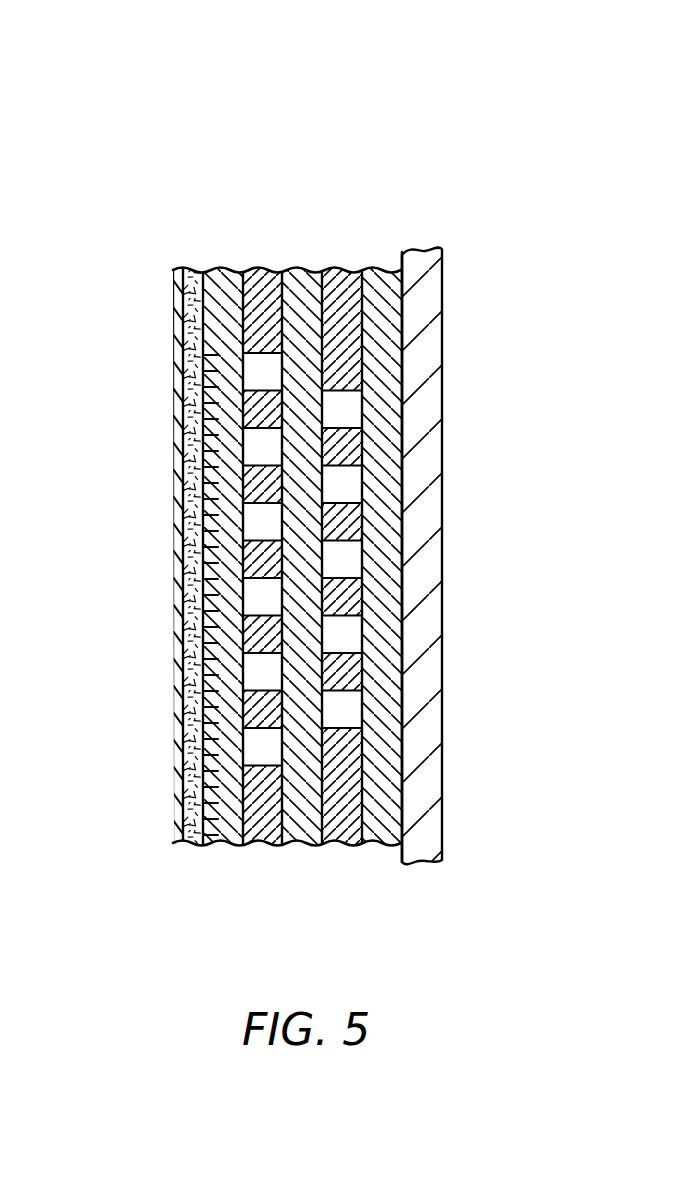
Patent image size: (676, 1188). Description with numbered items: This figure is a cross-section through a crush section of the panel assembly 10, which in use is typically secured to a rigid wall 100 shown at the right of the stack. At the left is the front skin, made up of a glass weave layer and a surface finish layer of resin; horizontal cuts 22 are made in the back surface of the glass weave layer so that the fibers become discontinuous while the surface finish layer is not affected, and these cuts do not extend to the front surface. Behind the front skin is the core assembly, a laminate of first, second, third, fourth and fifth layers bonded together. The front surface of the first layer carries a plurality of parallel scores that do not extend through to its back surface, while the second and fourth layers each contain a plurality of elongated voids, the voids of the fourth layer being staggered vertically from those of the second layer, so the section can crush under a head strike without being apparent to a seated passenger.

The panel assembly 10 is at (93, 156).
The horizontal cuts 22 is at (193, 712).
The rigid wall 100 is at (422, 297).